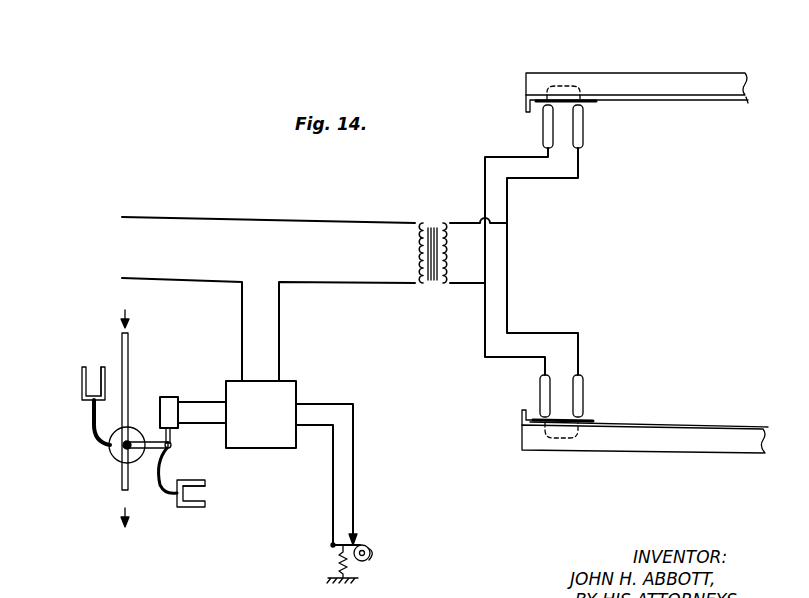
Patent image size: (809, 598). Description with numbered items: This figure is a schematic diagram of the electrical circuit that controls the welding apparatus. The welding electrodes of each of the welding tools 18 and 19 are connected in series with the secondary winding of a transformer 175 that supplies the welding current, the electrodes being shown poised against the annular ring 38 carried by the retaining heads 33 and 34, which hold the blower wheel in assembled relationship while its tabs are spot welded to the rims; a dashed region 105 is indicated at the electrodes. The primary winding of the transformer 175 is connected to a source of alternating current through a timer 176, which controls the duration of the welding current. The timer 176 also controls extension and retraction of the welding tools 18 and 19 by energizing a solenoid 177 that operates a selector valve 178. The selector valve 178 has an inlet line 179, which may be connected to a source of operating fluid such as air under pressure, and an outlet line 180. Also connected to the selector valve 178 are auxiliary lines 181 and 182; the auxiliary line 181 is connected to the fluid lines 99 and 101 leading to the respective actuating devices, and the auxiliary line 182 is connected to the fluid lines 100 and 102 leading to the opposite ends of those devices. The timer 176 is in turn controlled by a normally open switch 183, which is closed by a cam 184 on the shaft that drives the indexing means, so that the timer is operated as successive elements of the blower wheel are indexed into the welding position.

The sensing region 105 is at (576, 84).
The annular ring 38 is at (735, 74).
The retaining head 34 is at (686, 101).
The retaining head 33 is at (668, 432).
The welding tool 19 is at (567, 141).
The welding tool 18 is at (567, 384).
The transformer 175 is at (436, 287).
The timer 176 is at (272, 450).
The solenoid 177 is at (174, 397).
The selector valve 178 is at (118, 462).
The inlet line 179 is at (130, 368).
The outlet line 180 is at (135, 497).
The auxiliary line 181 is at (97, 451).
The auxiliary line 182 is at (165, 475).
The fluid line 99 is at (88, 364).
The fluid line 101 is at (107, 383).
The fluid line 100 is at (245, 478).
The fluid line 102 is at (203, 508).
The switch 183 is at (356, 542).
The cam 184 is at (370, 560).